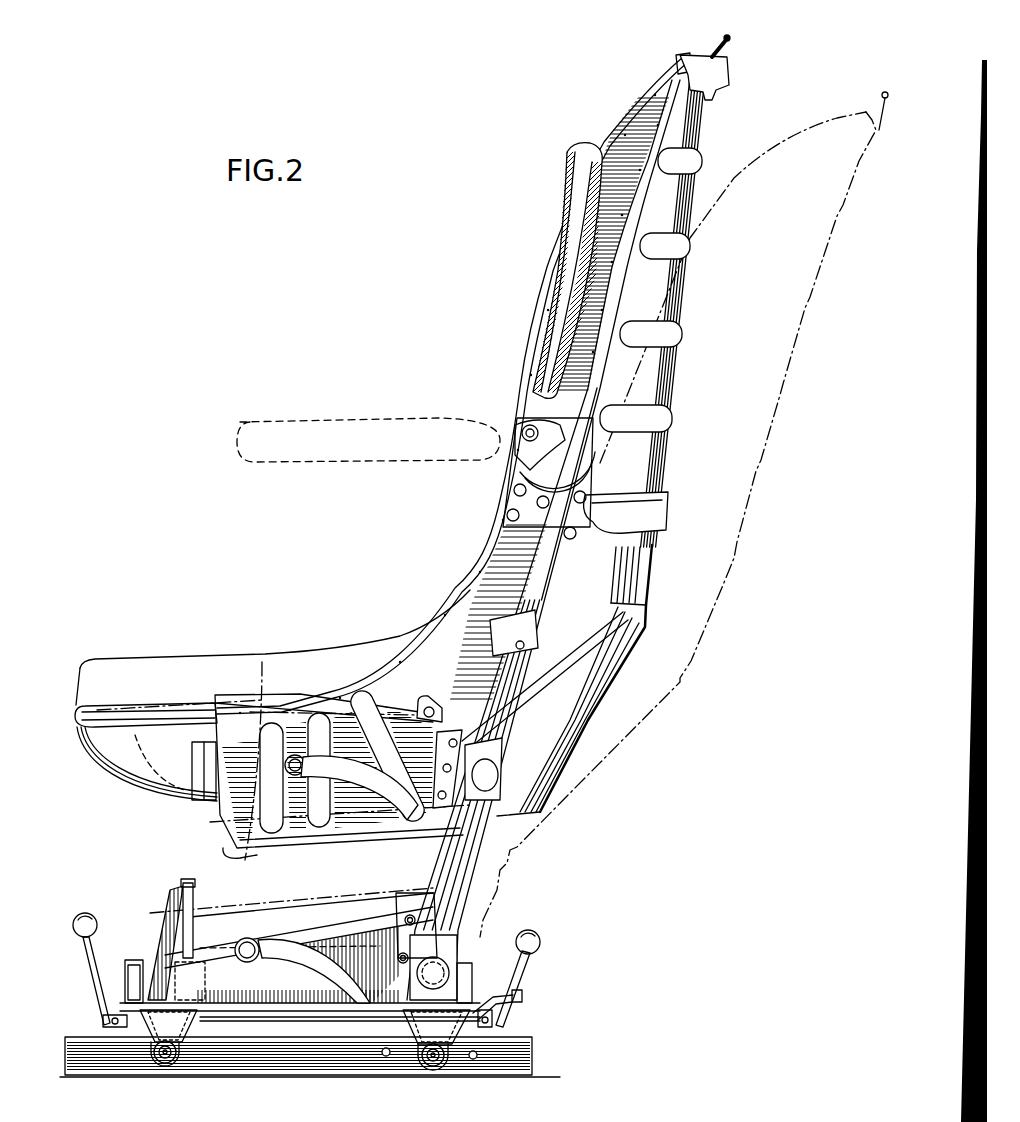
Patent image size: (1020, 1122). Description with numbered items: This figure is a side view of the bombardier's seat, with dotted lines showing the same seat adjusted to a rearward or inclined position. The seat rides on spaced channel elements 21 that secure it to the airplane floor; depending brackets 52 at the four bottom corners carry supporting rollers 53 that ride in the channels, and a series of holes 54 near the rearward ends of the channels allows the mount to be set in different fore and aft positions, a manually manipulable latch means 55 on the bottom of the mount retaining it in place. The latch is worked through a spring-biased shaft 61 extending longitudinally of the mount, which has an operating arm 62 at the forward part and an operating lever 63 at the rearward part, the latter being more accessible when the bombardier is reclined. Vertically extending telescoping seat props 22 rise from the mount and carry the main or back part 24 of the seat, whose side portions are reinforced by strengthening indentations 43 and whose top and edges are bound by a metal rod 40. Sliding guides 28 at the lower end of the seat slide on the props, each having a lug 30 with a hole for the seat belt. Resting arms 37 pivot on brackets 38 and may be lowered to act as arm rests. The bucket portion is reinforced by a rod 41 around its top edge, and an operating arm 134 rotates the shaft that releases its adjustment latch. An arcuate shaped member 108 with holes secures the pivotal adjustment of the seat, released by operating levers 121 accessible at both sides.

The channel elements 21 is at (534, 1057).
The telescoping seat props 22 is at (482, 872).
The main or back part of the seat 24 is at (704, 121).
The sliding guides 28 is at (505, 766).
The lug 30 is at (422, 702).
The resting arms 37 is at (548, 268).
The brackets 38 is at (527, 428).
The metal rod 40 is at (678, 56).
The rod 41 is at (77, 718).
The strengthening indentations 43 is at (335, 705).
The depending brackets 52 is at (183, 1036).
The supporting rollers 53 is at (165, 1066).
The holes 54 is at (478, 1052).
The latch means 55 is at (122, 760).
The spring-biased shaft 61 is at (322, 1018).
The operating arm 62 is at (96, 967).
The operating lever 63 is at (522, 962).
The arcuate shaped member 108 is at (168, 905).
The operating levers 121 is at (296, 944).
The operating arm 134 is at (325, 762).